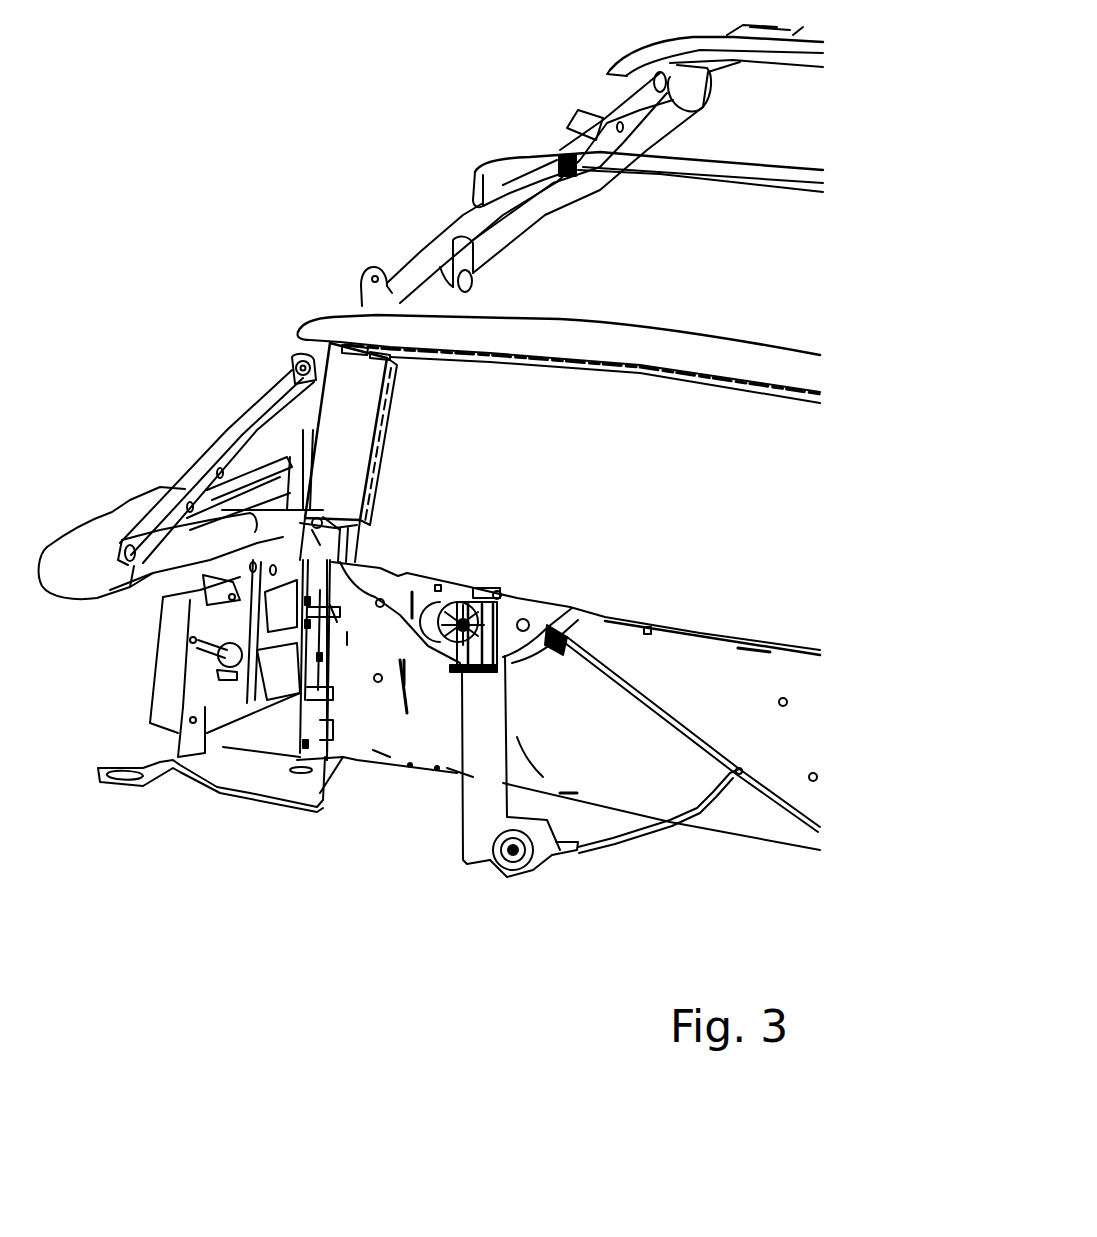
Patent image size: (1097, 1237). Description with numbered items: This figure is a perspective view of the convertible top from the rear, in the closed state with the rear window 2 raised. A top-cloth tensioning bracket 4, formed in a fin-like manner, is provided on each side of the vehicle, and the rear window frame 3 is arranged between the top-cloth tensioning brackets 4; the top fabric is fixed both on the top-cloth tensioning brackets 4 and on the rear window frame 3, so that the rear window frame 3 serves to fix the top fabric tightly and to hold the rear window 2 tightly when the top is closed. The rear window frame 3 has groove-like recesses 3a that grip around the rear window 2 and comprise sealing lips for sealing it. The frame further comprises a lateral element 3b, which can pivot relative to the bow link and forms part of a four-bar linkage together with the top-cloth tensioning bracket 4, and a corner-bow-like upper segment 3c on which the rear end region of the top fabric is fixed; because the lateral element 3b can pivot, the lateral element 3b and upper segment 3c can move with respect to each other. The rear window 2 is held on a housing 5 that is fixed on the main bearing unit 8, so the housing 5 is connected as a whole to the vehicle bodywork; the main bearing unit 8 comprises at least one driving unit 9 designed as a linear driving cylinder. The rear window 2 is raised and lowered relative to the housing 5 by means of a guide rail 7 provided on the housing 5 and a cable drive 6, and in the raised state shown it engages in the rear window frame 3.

The rear window 2 is at (566, 451).
The rear window frame 3 is at (602, 297).
The groove-like recesses 3a is at (378, 458).
The lateral element of the rear window frame 3b is at (337, 467).
The upper segment of the rear window frame 3c is at (682, 350).
The top-cloth tensioning bracket 4 is at (94, 548).
The housing 5 is at (407, 733).
The cable drive 6 is at (752, 783).
The guide rail 7 is at (477, 813).
The main bearing unit 8 is at (197, 808).
The driving unit 9 is at (277, 680).